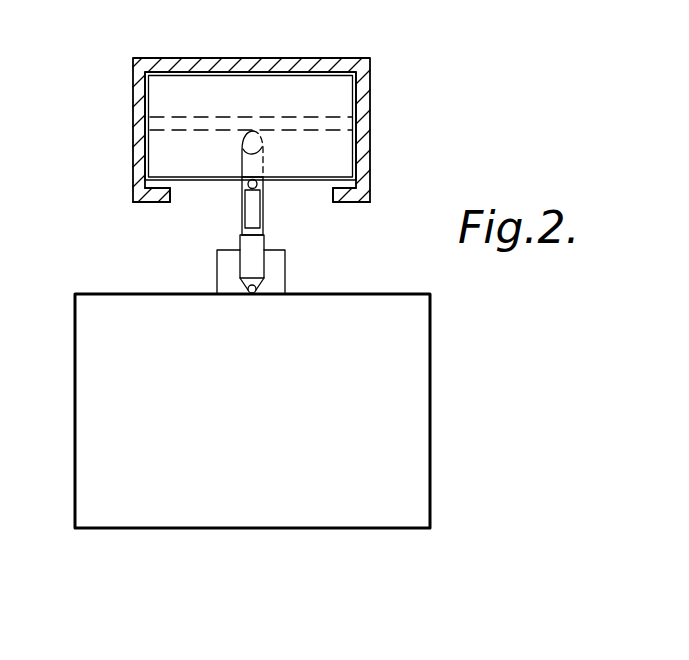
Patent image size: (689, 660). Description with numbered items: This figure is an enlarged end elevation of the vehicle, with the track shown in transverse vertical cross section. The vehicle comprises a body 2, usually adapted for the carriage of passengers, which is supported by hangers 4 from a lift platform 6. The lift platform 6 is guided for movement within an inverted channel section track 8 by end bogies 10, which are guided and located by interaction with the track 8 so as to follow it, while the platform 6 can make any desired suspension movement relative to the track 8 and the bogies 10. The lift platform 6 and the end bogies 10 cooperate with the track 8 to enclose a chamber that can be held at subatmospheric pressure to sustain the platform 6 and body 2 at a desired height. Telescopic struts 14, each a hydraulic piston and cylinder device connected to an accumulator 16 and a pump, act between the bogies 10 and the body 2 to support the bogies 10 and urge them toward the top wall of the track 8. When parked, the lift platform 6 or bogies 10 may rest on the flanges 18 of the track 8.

The body 2 is at (262, 382).
The hangers 4 is at (240, 165).
The lift platform 6 is at (338, 116).
The inverted channel section track 8 is at (186, 55).
The end bogies 10 is at (278, 93).
The telescopic struts 14 is at (252, 256).
The accumulator 16 is at (217, 268).
The flanges 18 is at (172, 190).